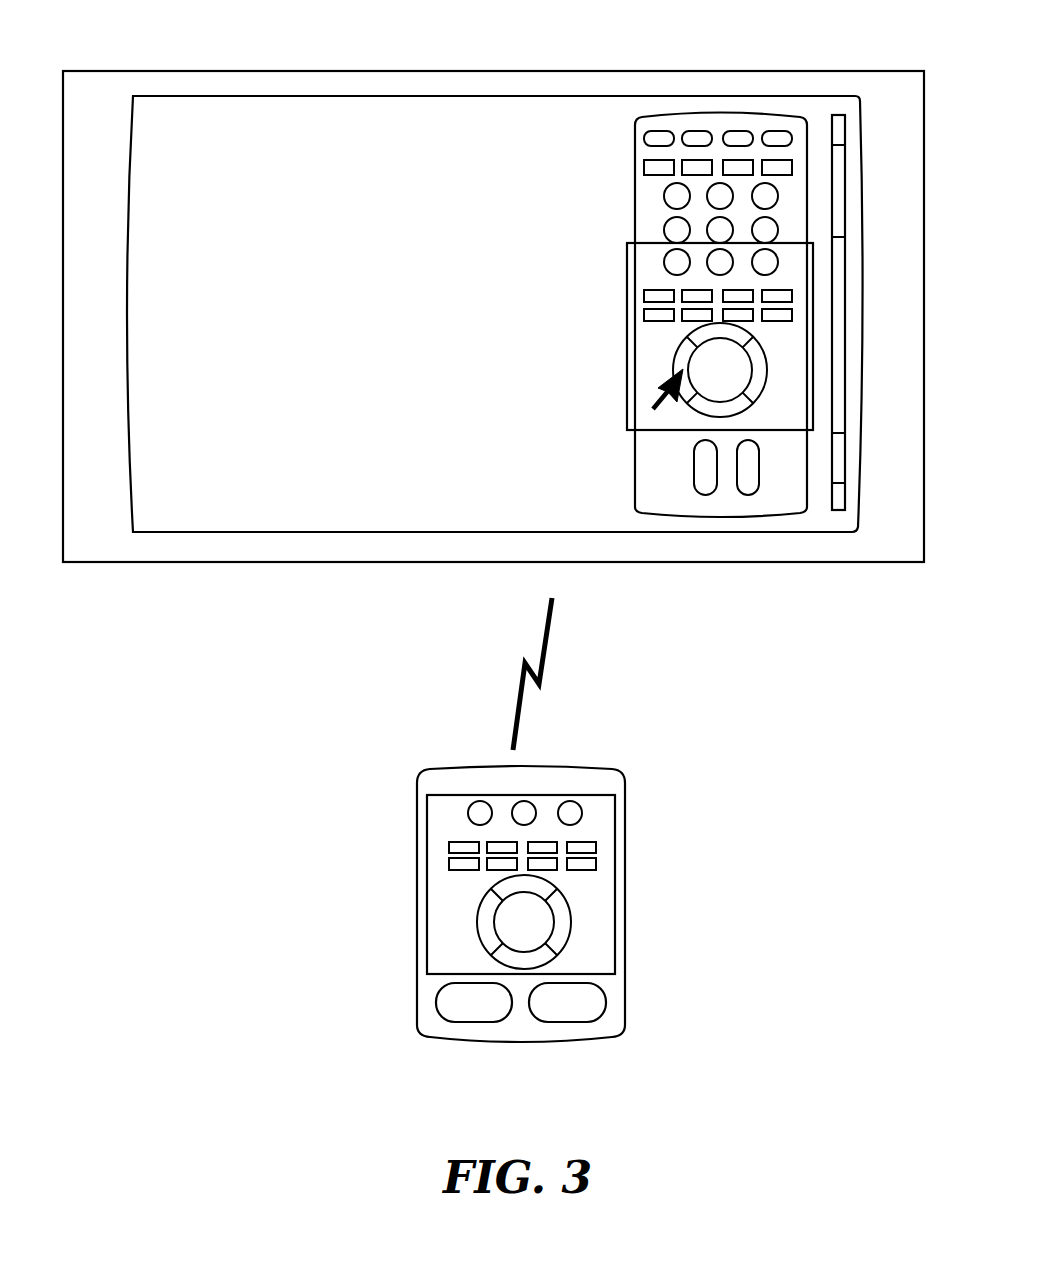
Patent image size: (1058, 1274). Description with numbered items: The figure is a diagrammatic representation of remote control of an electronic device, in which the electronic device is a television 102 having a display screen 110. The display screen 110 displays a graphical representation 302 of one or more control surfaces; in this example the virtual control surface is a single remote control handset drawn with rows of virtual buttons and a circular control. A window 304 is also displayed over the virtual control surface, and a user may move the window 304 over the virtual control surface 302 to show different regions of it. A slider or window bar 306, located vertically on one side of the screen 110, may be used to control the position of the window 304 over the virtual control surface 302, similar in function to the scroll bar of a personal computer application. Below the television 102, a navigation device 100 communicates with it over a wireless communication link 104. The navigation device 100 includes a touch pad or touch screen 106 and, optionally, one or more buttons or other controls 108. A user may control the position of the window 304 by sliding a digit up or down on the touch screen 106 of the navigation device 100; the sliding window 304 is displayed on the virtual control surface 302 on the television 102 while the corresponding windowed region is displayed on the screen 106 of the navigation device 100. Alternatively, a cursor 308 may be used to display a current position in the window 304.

The navigation device 100 is at (493, 1043).
The television 102 is at (382, 70).
The wireless communication link 104 is at (518, 708).
The touch sensitive pad 106 is at (425, 898).
The buttons or other controls 108 is at (436, 1002).
The display screen 110 is at (513, 95).
The graphical representation of control surfaces 302 is at (635, 185).
The window 304 is at (627, 295).
The window bar 306 is at (845, 183).
The cursor 308 is at (657, 397).